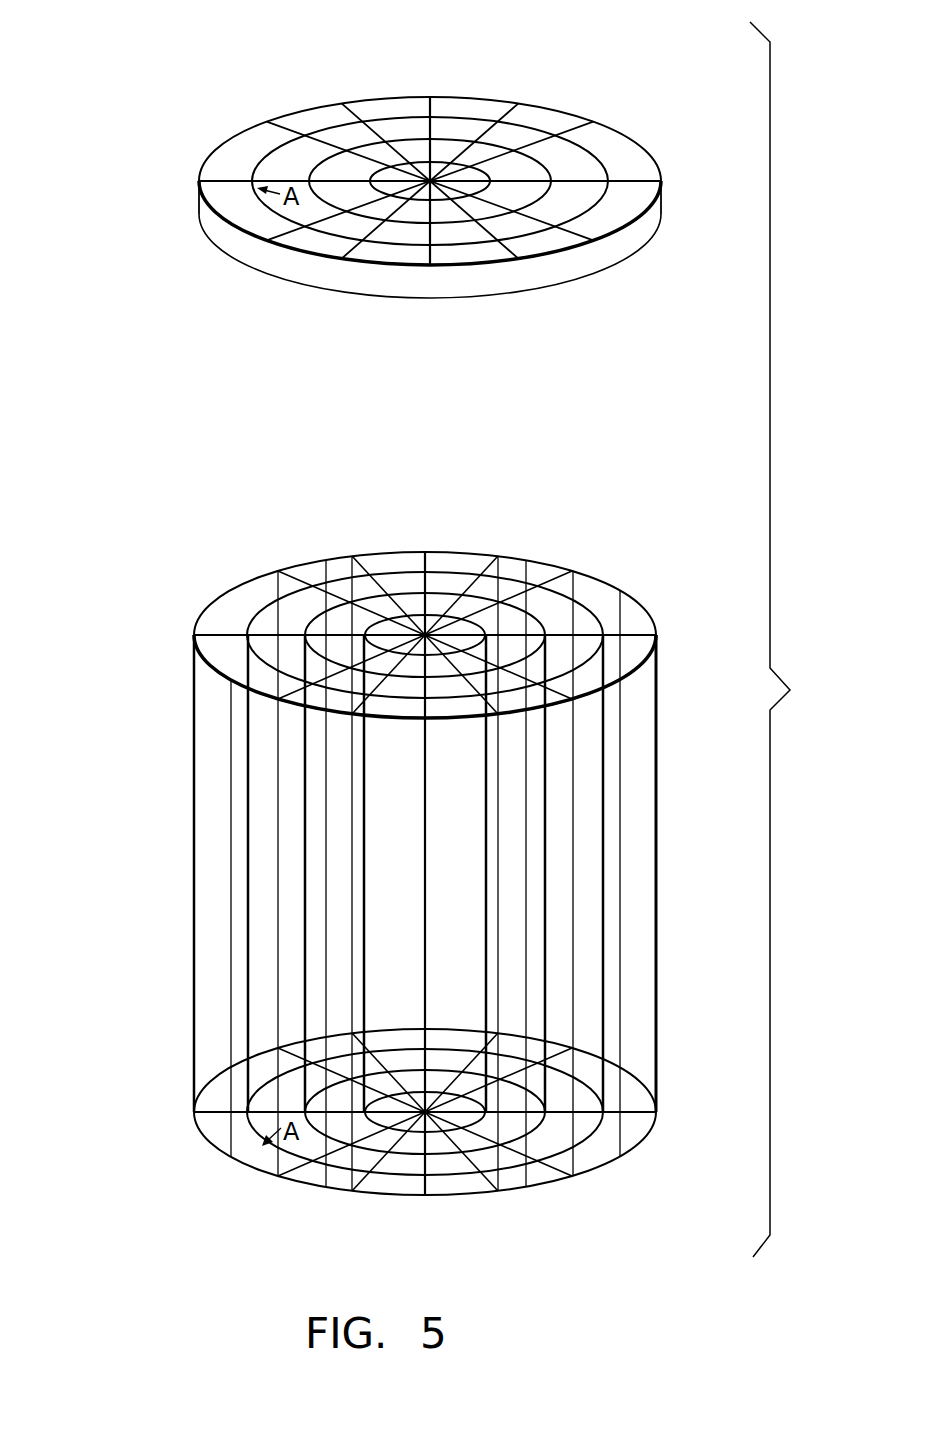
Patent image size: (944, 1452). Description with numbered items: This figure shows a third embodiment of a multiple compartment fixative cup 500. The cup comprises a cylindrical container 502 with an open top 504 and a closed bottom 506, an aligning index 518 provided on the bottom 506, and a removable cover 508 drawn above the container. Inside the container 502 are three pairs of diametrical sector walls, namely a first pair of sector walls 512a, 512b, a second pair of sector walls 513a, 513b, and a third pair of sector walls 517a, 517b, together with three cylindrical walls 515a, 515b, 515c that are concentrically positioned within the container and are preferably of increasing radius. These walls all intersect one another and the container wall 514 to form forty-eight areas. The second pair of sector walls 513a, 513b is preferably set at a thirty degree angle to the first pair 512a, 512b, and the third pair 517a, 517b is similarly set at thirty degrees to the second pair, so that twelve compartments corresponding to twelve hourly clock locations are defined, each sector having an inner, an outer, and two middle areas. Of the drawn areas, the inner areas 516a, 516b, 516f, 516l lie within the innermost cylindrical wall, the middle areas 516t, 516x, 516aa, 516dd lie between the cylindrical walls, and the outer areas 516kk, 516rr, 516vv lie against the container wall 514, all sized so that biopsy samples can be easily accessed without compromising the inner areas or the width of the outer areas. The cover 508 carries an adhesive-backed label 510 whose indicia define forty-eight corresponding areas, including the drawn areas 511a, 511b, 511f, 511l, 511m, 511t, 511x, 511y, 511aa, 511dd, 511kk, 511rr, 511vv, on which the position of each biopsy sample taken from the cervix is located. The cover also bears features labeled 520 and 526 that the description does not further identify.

The multiple compartment fixative cup 500 is at (794, 564).
The cylindrical container 502 is at (668, 967).
The open top 504 is at (552, 577).
The closed bottom 506 is at (510, 1160).
The removable cover 508 is at (172, 257).
The adhesive-backed label 510 is at (560, 118).
The area of label 511a is at (387, 182).
The area of label 511aa is at (350, 133).
The area of label 511b is at (432, 180).
The area of label 511dd is at (432, 181).
The area of label 511f is at (432, 181).
The area of label 511kk is at (253, 217).
The area of label 511l is at (415, 207).
The area of label 511m is at (360, 195).
The area of label 511rr is at (617, 212).
The area of label 511t is at (508, 193).
The area of label 511vv is at (332, 247).
The area of label 511x is at (407, 193).
The area of label 511y is at (305, 215).
The first pair diametrical sector wall 512a is at (232, 635).
The first pair diametrical sector wall 512b is at (423, 707).
The second pair diametrical sector wall 513a is at (290, 578).
The second pair diametrical sector wall 513b is at (335, 689).
The container wall 514 is at (660, 833).
The cylindrical wall 515a is at (478, 597).
The cylindrical wall 515b is at (532, 630).
The cylindrical wall 515c is at (560, 662).
The inner area 516a is at (330, 625).
The middle area 516aa is at (337, 587).
The inner area 516b is at (300, 605).
The middle area 516dd is at (540, 585).
The inner area 516f is at (600, 636).
The outer area 516kk is at (212, 642).
The inner area 516l is at (305, 667).
The outer area 516rr is at (633, 653).
The middle area 516t is at (540, 668).
The outer area 516vv is at (383, 667).
The middle area 516x is at (497, 714).
The third pair diametrical sector wall 517a is at (376, 568).
The third pair diametrical sector wall 517b is at (590, 597).
The aligning index 518 is at (274, 1162).
The ring on disc 520 is at (250, 180).
The center of disc 526 is at (432, 180).